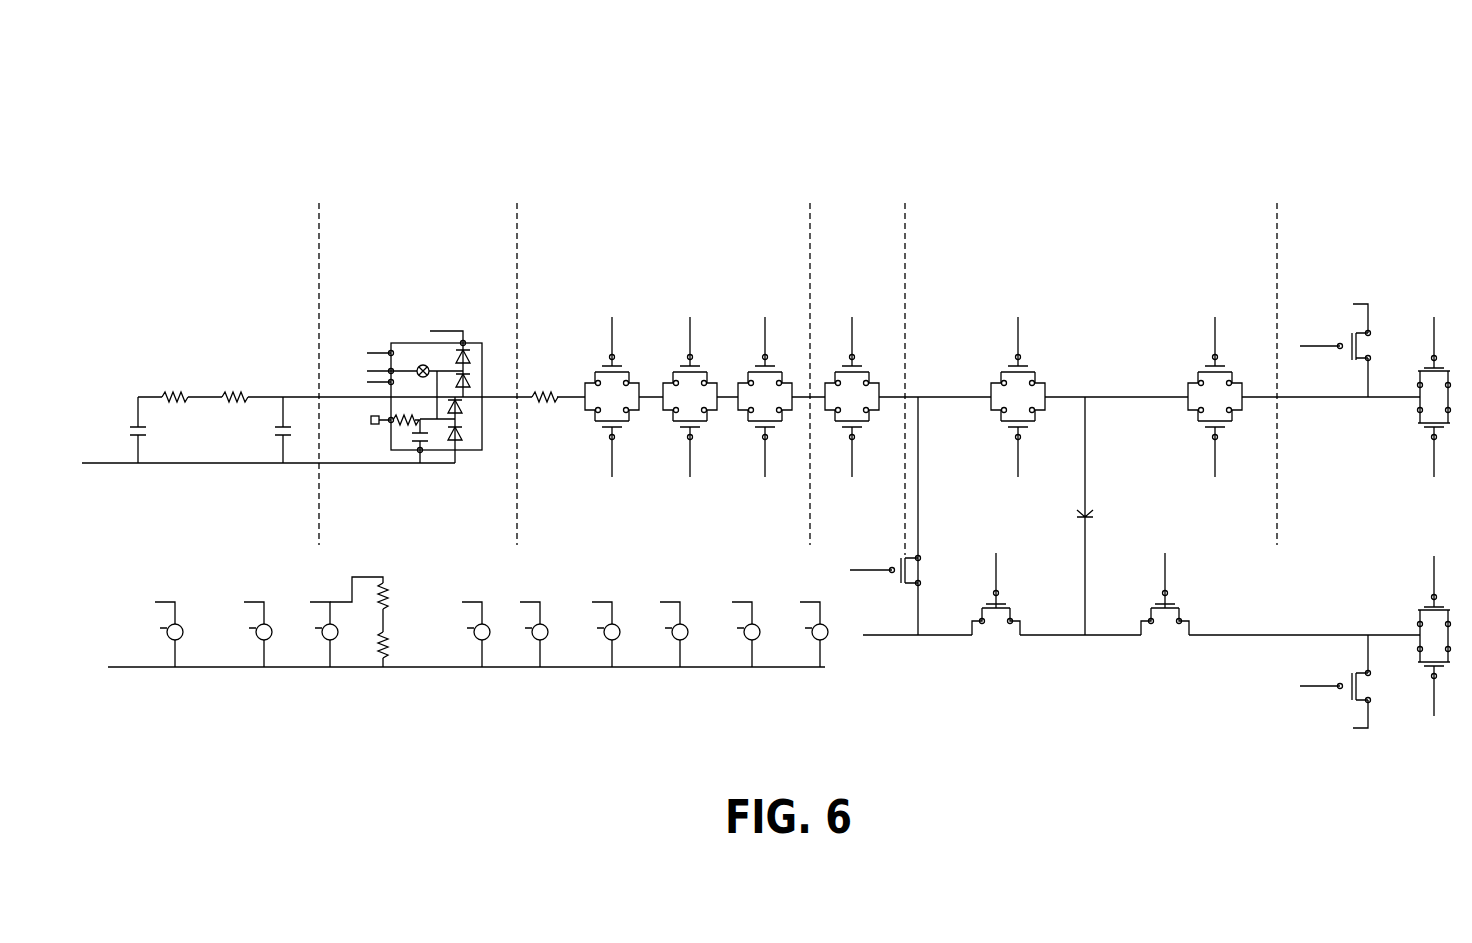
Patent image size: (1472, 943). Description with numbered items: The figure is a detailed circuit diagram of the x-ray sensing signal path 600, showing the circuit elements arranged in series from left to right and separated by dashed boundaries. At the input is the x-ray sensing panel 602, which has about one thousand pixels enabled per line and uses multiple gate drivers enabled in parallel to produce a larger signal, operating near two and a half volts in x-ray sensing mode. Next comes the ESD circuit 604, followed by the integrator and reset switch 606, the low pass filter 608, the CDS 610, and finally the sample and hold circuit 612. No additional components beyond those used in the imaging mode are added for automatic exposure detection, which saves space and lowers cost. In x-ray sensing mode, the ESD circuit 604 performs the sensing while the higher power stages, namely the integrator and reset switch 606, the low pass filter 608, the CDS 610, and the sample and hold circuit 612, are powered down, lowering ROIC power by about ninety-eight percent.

The circuit 600 is at (1265, 61).
The x-ray sensing panel 602 is at (243, 220).
The ESD circuit 604 is at (436, 220).
The integrator and reset switch 606 is at (669, 220).
The low pass filter 608 is at (863, 220).
The CDS 610 is at (1131, 220).
The sample and hold circuit 612 is at (1349, 220).